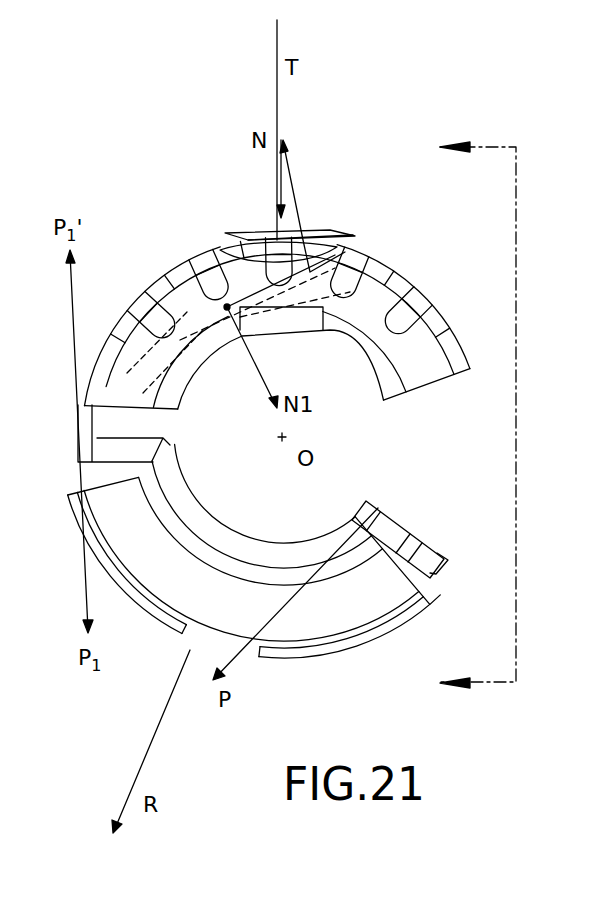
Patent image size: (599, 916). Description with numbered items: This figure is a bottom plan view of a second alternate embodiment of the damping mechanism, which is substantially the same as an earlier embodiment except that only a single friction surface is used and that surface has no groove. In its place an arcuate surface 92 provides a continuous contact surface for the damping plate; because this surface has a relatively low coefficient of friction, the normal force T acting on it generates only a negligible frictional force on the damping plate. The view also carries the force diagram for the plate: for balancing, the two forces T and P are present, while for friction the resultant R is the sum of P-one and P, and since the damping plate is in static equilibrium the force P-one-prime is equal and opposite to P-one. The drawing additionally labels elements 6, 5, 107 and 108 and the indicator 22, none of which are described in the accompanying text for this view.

The arcuate surface 92 is at (247, 263).
The permanent magnet (hidden) 6 is at (186, 312).
The support plate 107 is at (333, 253).
The guide block 108 is at (215, 320).
The clamp fastener 5 is at (383, 510).
The section line for FIG. 22 is at (459, 420).